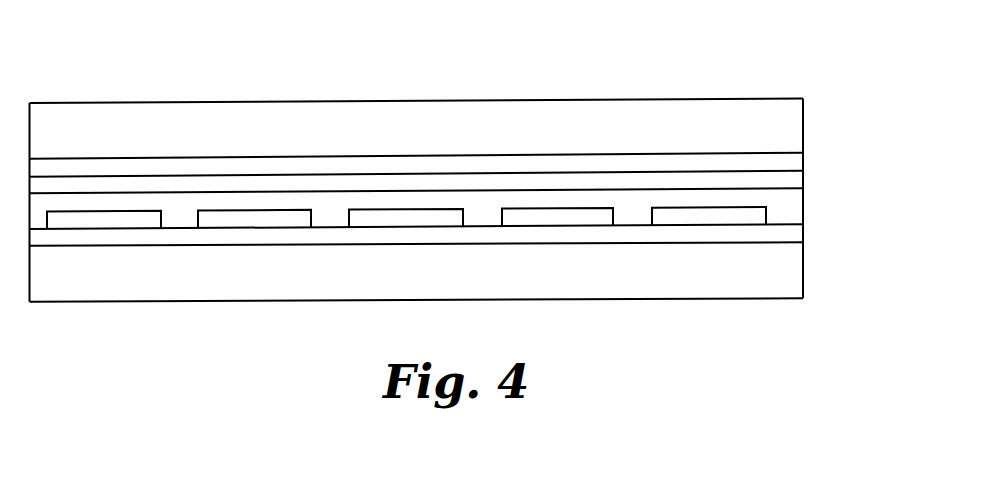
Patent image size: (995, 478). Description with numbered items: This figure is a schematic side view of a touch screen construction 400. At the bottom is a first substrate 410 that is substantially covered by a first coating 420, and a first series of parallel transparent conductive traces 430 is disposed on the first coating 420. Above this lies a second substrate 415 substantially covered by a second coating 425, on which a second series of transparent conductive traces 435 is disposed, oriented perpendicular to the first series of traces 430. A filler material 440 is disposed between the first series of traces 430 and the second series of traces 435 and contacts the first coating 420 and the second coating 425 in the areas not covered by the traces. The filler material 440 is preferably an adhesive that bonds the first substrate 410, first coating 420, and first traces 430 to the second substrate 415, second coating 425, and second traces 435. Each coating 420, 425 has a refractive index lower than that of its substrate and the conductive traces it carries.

The touch screen construction 400 is at (250, 52).
The first substrate 410 is at (670, 287).
The second substrate 415 is at (742, 107).
The first coating 420 is at (793, 235).
The second coating 425 is at (790, 163).
The first series of parallel transparent conductive traces 430 is at (665, 215).
The second series of transparent conductive traces 435 is at (795, 180).
The filler material 440 is at (795, 211).